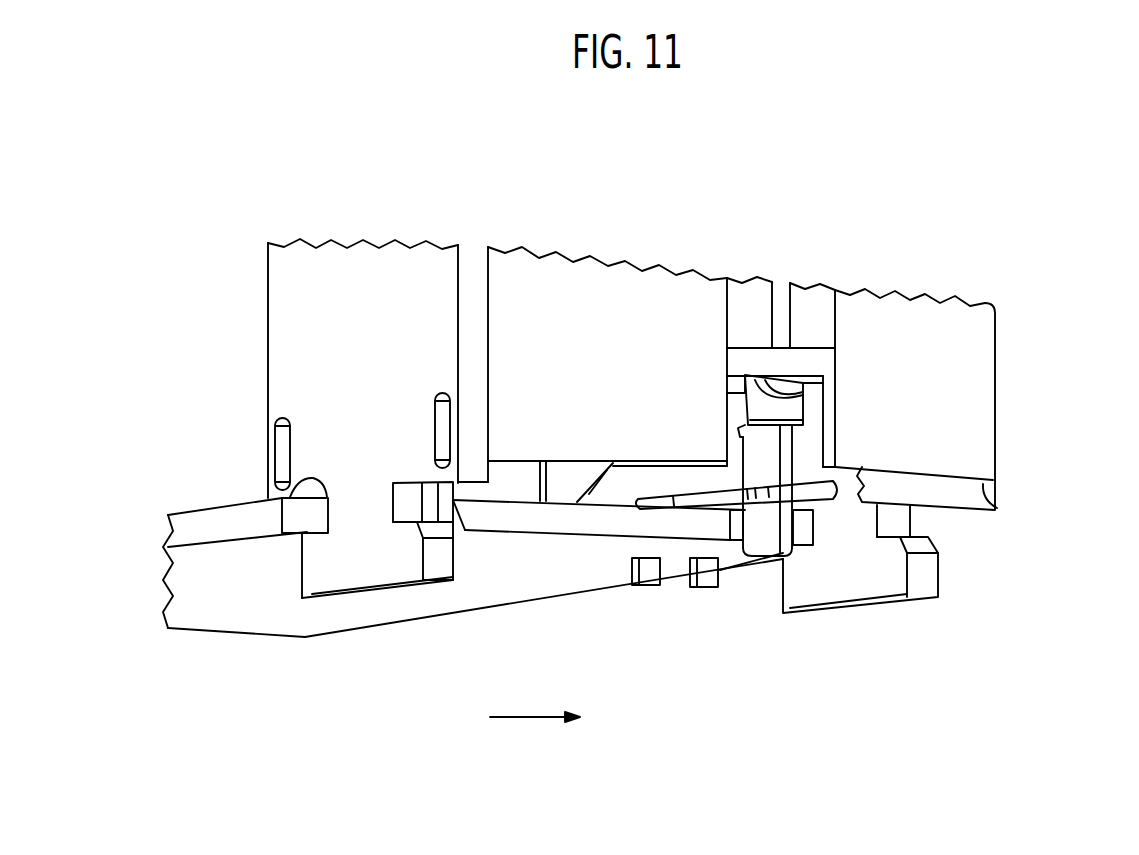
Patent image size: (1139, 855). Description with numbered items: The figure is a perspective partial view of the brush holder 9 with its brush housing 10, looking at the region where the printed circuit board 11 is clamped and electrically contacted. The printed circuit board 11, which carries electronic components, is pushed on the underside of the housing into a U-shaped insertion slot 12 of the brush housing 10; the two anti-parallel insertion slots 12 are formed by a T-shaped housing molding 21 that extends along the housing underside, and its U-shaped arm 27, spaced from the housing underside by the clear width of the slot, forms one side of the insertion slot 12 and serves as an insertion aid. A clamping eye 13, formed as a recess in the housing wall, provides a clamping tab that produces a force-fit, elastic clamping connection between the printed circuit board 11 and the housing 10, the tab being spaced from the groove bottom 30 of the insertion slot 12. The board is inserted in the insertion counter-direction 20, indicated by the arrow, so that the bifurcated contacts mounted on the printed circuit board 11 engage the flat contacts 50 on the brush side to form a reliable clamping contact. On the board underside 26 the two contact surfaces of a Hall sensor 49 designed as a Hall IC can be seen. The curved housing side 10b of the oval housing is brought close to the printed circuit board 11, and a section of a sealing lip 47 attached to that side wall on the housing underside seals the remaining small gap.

The brush holder 9 is at (359, 245).
The brush housing 10 is at (609, 278).
The curved housing side 10b is at (975, 386).
The printed circuit board 11 is at (543, 518).
The U-shaped insertion slot 12 is at (318, 482).
The clamping eye 13 is at (283, 440).
The insertion counter-direction 20 is at (530, 722).
The T-shaped housing molding 21 is at (370, 592).
The board underside 26 is at (222, 598).
The U-shaped arm 27 is at (291, 585).
The groove bottom 30 is at (408, 502).
The sealing lip 47 is at (977, 495).
The Hall sensor 49 is at (762, 540).
The flat contact 50 is at (703, 497).